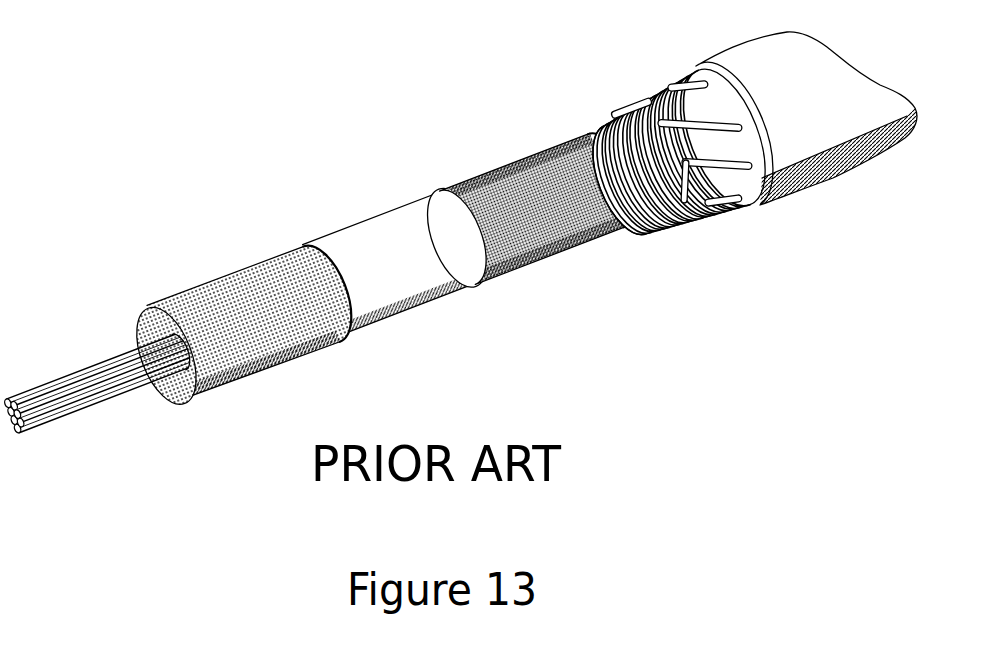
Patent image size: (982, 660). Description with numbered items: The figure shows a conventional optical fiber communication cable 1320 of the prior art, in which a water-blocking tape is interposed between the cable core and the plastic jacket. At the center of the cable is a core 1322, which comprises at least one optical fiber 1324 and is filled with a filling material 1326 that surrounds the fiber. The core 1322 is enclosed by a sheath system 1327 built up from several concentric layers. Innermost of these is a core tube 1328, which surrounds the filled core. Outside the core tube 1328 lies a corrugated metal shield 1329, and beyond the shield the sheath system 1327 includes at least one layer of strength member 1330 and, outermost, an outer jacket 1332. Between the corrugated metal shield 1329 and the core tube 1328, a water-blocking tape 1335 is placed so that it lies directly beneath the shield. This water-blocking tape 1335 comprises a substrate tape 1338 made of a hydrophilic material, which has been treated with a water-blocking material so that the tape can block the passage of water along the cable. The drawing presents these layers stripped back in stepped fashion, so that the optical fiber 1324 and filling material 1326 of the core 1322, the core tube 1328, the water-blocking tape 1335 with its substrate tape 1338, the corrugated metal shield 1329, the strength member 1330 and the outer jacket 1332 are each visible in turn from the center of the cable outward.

The communication cable 1320 is at (459, 240).
The core 1322 is at (51, 381).
The optical fiber 1324 is at (61, 421).
The filling material 1326 is at (180, 296).
The core tube 1328 is at (371, 336).
The substrate tape 1338 is at (457, 217).
The water-blocking tape 1335 is at (450, 183).
The sheath system 1327 is at (587, 256).
The corrugated metal shield 1329 is at (603, 250).
The strength member 1330 is at (637, 104).
The outer jacket 1332 is at (661, 92).